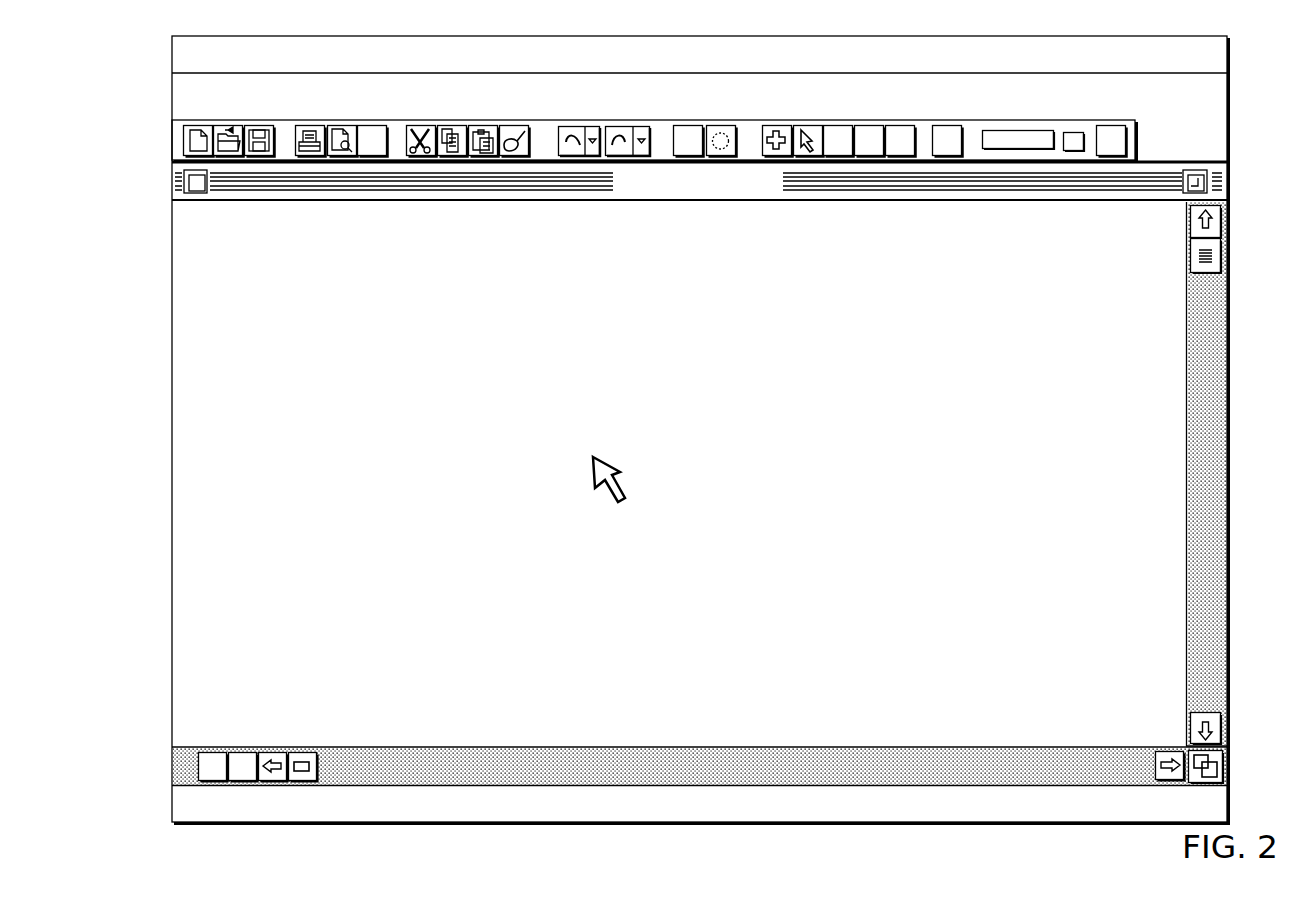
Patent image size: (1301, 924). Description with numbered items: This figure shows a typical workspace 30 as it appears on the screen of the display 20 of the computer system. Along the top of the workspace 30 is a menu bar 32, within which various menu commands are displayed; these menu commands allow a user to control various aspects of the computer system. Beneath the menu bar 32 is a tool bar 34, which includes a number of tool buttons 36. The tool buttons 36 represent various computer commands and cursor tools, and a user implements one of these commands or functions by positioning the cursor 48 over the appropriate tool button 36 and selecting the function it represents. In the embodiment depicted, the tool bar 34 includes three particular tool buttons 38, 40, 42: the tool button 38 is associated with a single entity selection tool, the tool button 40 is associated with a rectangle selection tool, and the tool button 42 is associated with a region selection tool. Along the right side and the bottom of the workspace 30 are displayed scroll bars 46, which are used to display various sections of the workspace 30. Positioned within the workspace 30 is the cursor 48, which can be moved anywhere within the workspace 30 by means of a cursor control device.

The display 20 is at (1230, 133).
The workspace 30 is at (1022, 482).
The menu bar 32 is at (975, 58).
The tool bar 34 is at (699, 123).
The tool buttons 36 is at (903, 139).
The tool button 38 is at (818, 127).
The tool button 40 is at (788, 127).
The tool button 42 is at (724, 129).
The scroll bars 46 is at (987, 767).
The cursor 48 is at (630, 488).